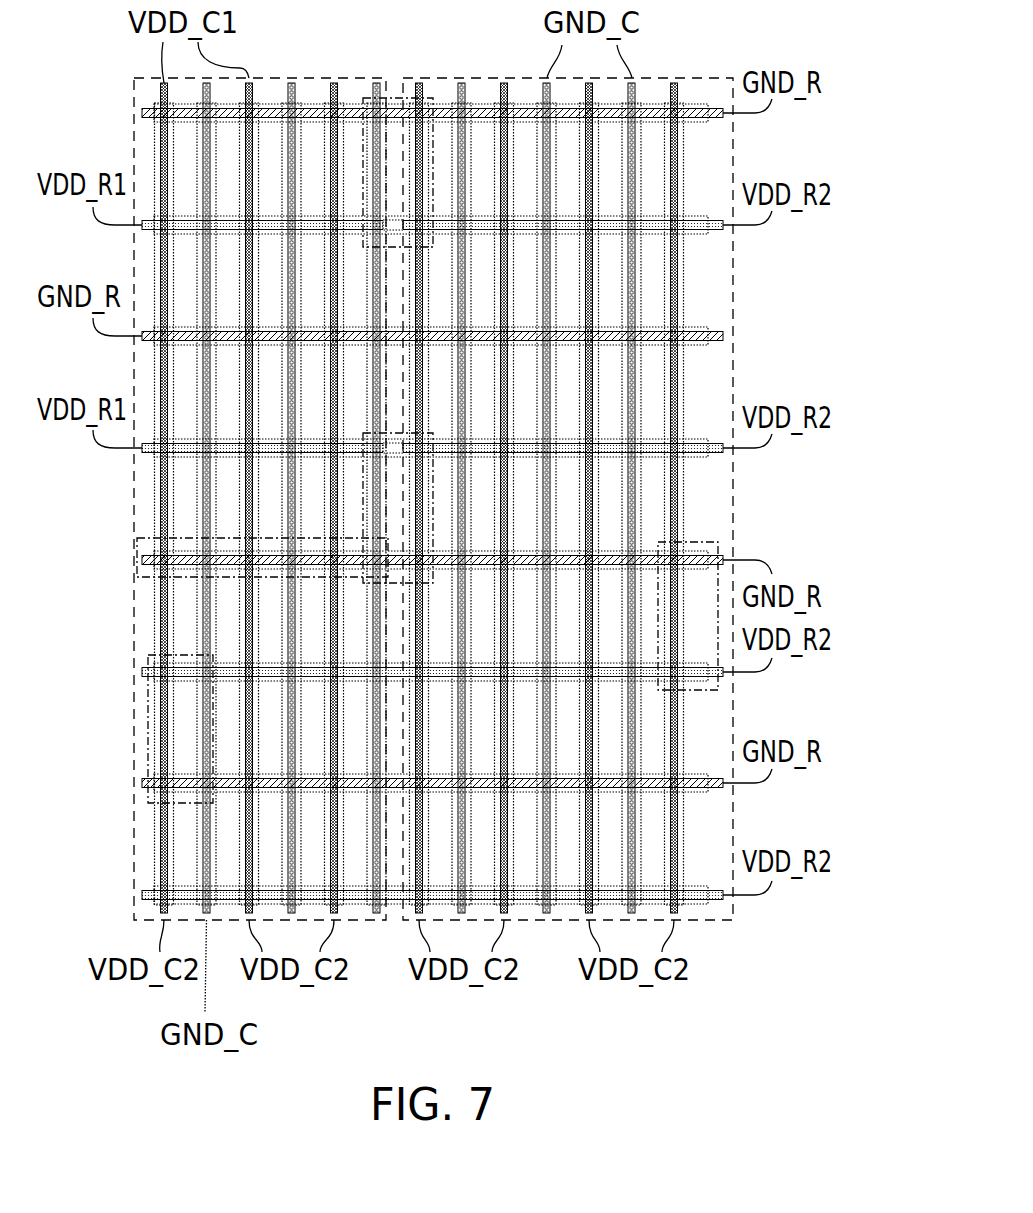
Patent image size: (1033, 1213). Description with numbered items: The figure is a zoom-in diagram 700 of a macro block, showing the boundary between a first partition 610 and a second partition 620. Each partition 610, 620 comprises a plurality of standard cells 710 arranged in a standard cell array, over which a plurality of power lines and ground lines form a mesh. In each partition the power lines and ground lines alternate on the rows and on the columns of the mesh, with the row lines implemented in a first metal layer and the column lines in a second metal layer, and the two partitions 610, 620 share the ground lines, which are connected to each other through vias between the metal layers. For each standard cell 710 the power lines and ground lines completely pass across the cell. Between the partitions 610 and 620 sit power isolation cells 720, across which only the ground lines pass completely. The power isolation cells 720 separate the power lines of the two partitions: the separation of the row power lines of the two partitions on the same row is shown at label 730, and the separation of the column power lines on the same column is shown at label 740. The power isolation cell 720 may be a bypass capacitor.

The partition 610 is at (305, 78).
The partition 620 is at (710, 78).
The zoom-in diagram 700 is at (423, 527).
The standard cell 710 is at (148, 730).
The power isolation cell 720 is at (390, 98).
The separation of row power lines 730 is at (395, 222).
The separation of column power lines 740 is at (259, 569).